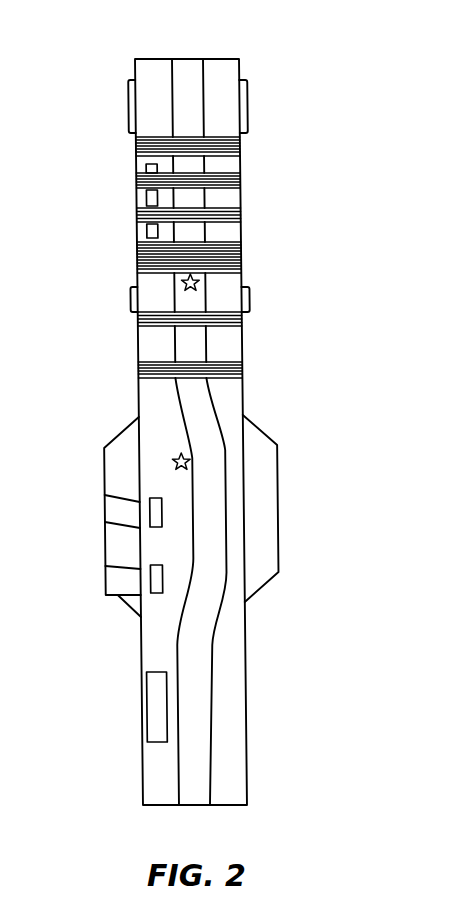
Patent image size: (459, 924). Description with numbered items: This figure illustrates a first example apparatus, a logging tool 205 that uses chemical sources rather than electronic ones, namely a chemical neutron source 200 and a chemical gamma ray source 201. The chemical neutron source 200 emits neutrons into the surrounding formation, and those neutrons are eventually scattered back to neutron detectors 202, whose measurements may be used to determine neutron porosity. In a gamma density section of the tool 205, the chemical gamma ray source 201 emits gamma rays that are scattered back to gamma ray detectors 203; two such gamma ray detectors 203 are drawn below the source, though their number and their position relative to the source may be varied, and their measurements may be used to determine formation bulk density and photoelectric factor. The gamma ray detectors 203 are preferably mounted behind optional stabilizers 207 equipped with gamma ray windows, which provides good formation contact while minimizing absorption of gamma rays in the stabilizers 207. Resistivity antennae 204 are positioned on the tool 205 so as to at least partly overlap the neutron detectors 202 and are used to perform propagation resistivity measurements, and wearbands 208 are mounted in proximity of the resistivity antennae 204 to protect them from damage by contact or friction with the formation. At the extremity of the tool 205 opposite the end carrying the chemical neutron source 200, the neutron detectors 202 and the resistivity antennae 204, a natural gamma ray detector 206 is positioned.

The tool 205 is at (268, 50).
The wearbands 208 is at (128, 102).
The resistivity antennae 204 is at (241, 147).
The neutron detectors 202 is at (146, 168).
The chemical neutron source 200 is at (182, 282).
The chemical gamma ray source 201 is at (174, 461).
The stabilizers 207 is at (111, 460).
The gamma ray detectors 203 is at (149, 515).
The natural gamma ray detector 206 is at (151, 707).